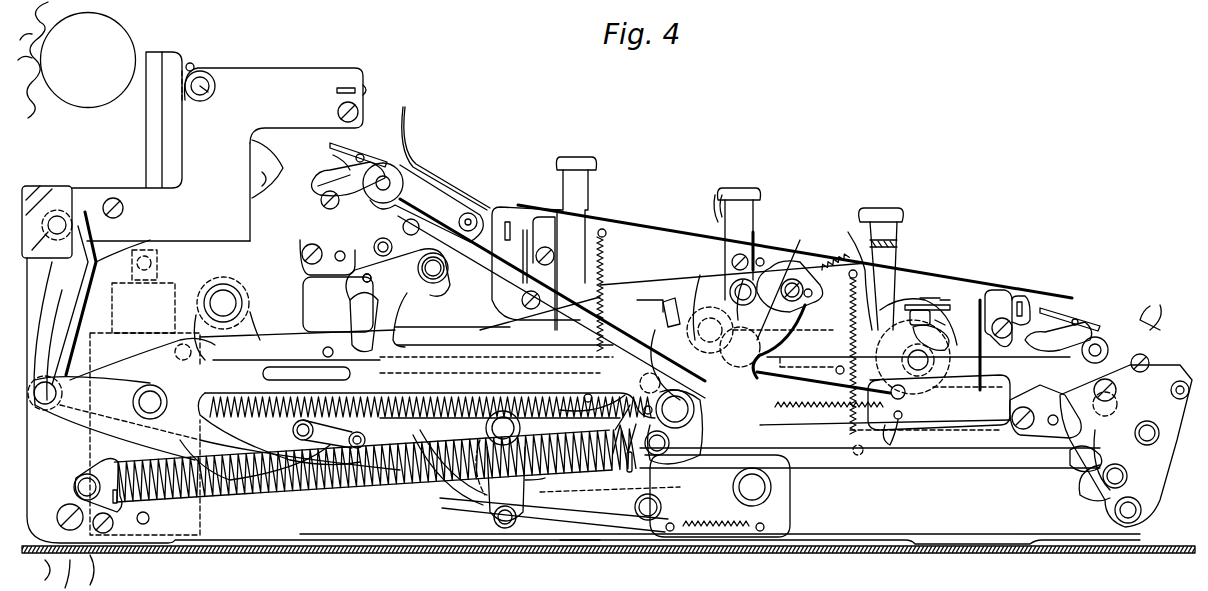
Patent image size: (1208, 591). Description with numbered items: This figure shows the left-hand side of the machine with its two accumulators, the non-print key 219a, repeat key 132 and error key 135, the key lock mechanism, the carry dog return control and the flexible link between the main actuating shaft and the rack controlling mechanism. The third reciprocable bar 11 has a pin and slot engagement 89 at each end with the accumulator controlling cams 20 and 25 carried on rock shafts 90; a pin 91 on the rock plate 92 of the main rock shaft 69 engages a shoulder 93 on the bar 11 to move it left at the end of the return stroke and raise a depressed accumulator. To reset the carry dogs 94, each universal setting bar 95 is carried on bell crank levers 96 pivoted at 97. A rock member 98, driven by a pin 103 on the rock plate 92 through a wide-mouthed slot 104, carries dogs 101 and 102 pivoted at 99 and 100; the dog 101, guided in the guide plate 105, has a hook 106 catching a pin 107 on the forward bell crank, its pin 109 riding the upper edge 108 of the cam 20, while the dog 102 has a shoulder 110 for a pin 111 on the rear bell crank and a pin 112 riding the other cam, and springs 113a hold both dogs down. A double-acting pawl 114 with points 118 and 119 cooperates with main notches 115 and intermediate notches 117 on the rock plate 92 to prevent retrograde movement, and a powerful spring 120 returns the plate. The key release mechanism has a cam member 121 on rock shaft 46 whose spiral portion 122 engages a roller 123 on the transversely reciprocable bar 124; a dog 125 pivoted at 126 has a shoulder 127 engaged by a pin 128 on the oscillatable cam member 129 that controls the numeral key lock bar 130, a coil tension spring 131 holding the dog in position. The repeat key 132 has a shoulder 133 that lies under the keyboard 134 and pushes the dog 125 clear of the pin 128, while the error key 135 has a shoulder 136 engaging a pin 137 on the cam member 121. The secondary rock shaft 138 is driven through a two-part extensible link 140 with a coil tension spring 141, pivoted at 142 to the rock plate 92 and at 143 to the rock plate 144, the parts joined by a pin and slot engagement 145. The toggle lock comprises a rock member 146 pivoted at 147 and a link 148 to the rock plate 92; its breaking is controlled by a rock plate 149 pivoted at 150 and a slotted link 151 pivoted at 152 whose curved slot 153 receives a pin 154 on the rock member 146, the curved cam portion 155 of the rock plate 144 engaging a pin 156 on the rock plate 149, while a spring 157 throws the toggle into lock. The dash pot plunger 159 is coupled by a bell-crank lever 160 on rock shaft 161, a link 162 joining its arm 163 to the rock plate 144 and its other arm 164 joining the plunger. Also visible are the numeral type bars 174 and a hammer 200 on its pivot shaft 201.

The third reciprocable bar 11 is at (818, 470).
The accumulator controlling cam 20 is at (1130, 476).
The accumulator controlling cam 25 is at (345, 293).
The rock shaft 46 is at (940, 312).
The main rock shaft 69 is at (775, 495).
The pin and slot engagement 89 is at (355, 322).
The rock shafts 90 is at (395, 390).
The pin 91 is at (612, 312).
The rock plate 92 is at (615, 490).
The offset portion or shoulder 93 is at (602, 325).
The carry dogs 94 is at (345, 148).
The universal returning or setting bar 95 is at (335, 172).
The bell crank levers 96 is at (335, 160).
The pivot 97 is at (410, 140).
The rock member 98 is at (772, 385).
The pivot 99 is at (790, 352).
The pivot 100 is at (790, 334).
The pivoted dog 101 is at (940, 398).
The pivoted dog 102 is at (478, 210).
The pin 103 is at (680, 470).
The wide-mouthed notch or slot 104 is at (760, 432).
The guide plate 105 is at (1000, 292).
The hook portion 106 is at (1075, 398).
The pin 107 is at (1068, 450).
The upper edge 108 is at (1145, 405).
The pin 109 is at (1117, 388).
The notch or shoulder 110 is at (330, 235).
The pin 111 is at (345, 240).
The pin 112 is at (420, 186).
The springs 113a is at (592, 392).
The double-acting pawl 114 is at (787, 317).
The main notches 115 is at (592, 422).
The intermediate notches 117 is at (695, 282).
The point 118 is at (781, 284).
The other point 119 is at (798, 318).
The powerful spring 120 is at (441, 470).
The cam member 121 is at (900, 305).
The spiral portion 122 is at (958, 305).
The roller 123 is at (920, 305).
The transversely reciprocable bar 124 is at (945, 295).
The dog 125 is at (800, 412).
The pivot 126 is at (912, 415).
The shoulder portion 127 is at (715, 355).
The pin 128 is at (836, 370).
The oscillatable cam member 129 is at (682, 312).
The numeral key lock bar 130 is at (655, 285).
The coil tension spring 131 is at (875, 430).
The repeat key 132 is at (742, 190).
The shoulder 133 is at (718, 203).
The keyboard 134 is at (695, 232).
The error key 135 is at (882, 210).
The shoulder portion 136 is at (852, 248).
The pin 137 is at (878, 348).
The secondary rock shaft 138 is at (226, 285).
The two-part extensible link 140 is at (238, 370).
The coil tension spring 141 is at (265, 430).
The pivot connection 142 is at (700, 372).
The pivot connection 143 is at (140, 418).
The rock plate 144 is at (165, 355).
The pin and slot engagement 145 is at (300, 368).
The rock member 146 is at (530, 480).
The pivot 147 is at (470, 410).
The link 148 is at (575, 545).
The rock plate 149 is at (335, 492).
The pivot 150 is at (322, 452).
The slotted link 151 is at (470, 505).
The pivot connection 152 is at (349, 441).
The curved slot 153 is at (486, 514).
The pin 154 is at (486, 427).
The curved cam portion 155 is at (100, 470).
The pin 156 is at (235, 412).
The spring 157 is at (718, 518).
The dash pot plunger 159 is at (165, 283).
The bell-crank lever 160 is at (94, 262).
The rock shaft 161 is at (66, 205).
The link 162 is at (80, 425).
The arm 163 is at (95, 328).
The other arm 164 is at (130, 245).
The numeral type bars 174 is at (162, 136).
The hammer 200 is at (266, 185).
The pivot shaft 201 is at (215, 88).
The non-print key 219a is at (580, 170).